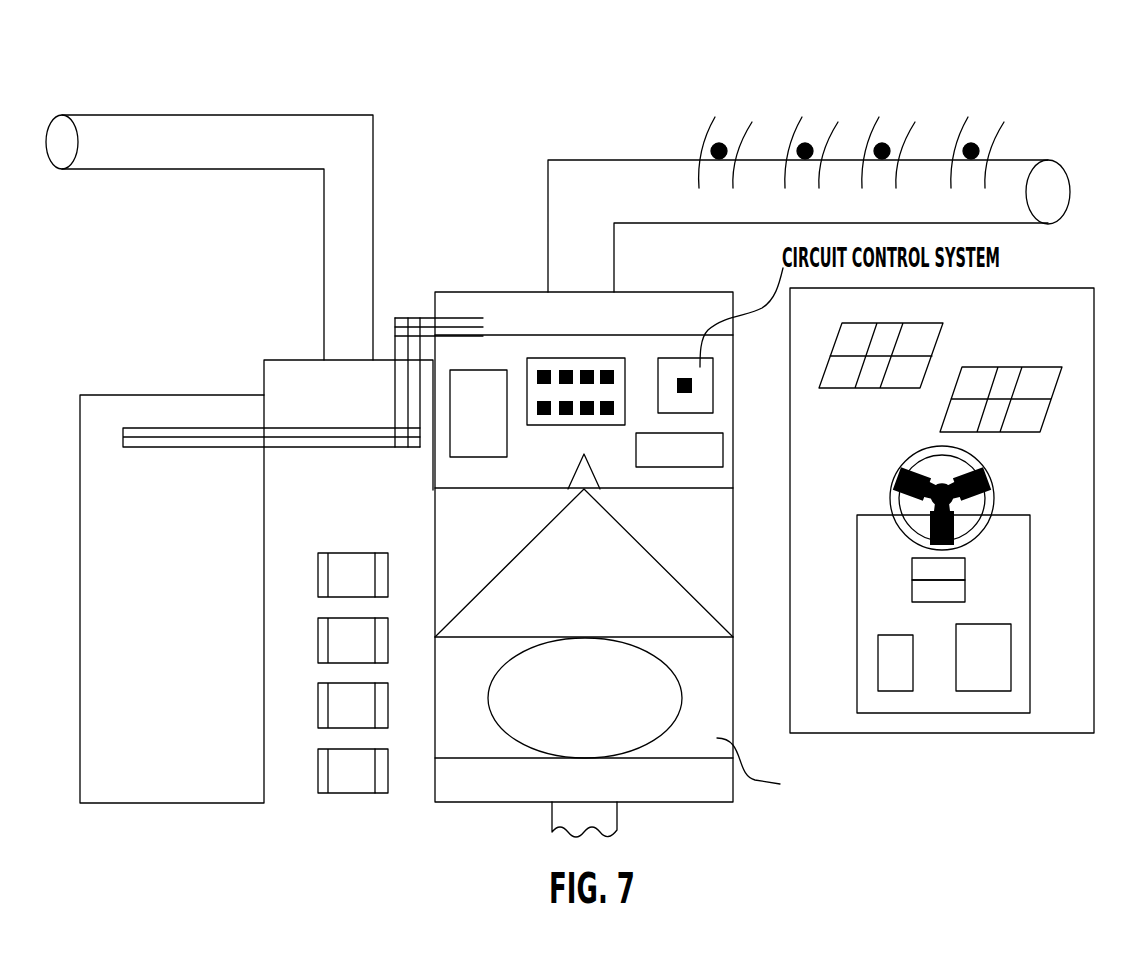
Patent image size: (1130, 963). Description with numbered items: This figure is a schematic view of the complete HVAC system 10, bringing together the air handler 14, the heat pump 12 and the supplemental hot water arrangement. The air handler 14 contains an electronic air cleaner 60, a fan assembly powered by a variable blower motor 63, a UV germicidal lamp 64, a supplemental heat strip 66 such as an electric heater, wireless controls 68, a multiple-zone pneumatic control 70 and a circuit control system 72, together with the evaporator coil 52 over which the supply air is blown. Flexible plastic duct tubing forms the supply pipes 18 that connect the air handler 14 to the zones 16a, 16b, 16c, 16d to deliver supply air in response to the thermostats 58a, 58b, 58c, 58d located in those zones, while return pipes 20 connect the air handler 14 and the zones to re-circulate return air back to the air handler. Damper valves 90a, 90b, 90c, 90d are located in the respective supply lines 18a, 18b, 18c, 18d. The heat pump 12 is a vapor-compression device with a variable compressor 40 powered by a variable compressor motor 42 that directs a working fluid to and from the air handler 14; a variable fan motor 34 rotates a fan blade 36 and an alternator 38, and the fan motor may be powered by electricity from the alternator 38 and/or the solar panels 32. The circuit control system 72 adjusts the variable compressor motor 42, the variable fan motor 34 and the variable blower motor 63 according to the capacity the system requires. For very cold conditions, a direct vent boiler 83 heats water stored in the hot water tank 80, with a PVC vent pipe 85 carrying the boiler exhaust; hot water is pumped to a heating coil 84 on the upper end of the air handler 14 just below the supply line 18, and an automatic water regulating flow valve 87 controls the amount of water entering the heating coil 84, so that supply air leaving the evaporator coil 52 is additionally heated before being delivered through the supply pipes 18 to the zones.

The HVAC system 10 is at (546, 153).
The heat pump 12 is at (1073, 707).
The air handler 14 is at (712, 677).
The zone 16a is at (388, 562).
The zone 16b is at (388, 642).
The zone 16c is at (388, 710).
The zone 16d is at (388, 775).
The supply pipes 18 is at (723, 212).
The supply line 18a is at (733, 128).
The supply line 18b is at (818, 128).
The supply line 18c is at (893, 128).
The supply line 18d is at (983, 128).
The return pipes 20 is at (552, 813).
The solar panels 32 is at (928, 339).
The variable fan motor 34 is at (922, 568).
The fan blade 36 is at (888, 495).
The alternator 38 is at (953, 592).
The variable compressor 40 is at (975, 677).
The variable compressor motor 42 is at (887, 663).
The evaporator coil 52 is at (553, 547).
The thermostat 58a is at (355, 577).
The thermostat 58b is at (355, 644).
The thermostat 58c is at (355, 705).
The thermostat 58d is at (348, 782).
The electronic air cleaner 60 is at (733, 787).
The variable blower motor 63 is at (502, 697).
The UV germicidal lamp 64 is at (577, 479).
The supplemental heat strip 66 is at (627, 365).
The wireless controls 68 is at (713, 452).
The pneumatic control 70 is at (465, 426).
The circuit control system 72 is at (707, 382).
The hot water tank 80 is at (159, 415).
The direct vent boiler 83 is at (305, 405).
The heating coil 84 is at (688, 307).
The PVC vent pipe 85 is at (348, 203).
The automatic water regulating flow valve 87 is at (460, 326).
The damper valve 90a is at (719, 159).
The damper valve 90b is at (805, 159).
The damper valve 90c is at (882, 159).
The damper valve 90d is at (979, 150).